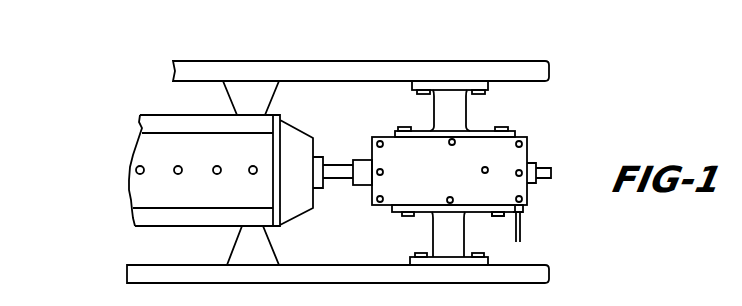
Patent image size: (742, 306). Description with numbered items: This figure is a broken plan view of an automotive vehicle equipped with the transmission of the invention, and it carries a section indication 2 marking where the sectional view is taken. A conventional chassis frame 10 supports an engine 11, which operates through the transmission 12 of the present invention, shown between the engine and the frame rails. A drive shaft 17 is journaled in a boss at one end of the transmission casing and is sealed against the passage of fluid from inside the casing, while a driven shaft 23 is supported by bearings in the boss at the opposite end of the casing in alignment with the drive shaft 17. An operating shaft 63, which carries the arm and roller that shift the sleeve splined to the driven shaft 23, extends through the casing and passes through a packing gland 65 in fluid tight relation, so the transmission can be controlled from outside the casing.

The chassis frame 10 is at (533, 66).
The engine 11 is at (136, 222).
The transmission 12 is at (531, 152).
The drive shaft 17 is at (357, 172).
The driven shaft 23 is at (549, 174).
The operating shaft 63 is at (521, 230).
The packing gland 65 is at (509, 216).
The section line of FIG. 2 is at (335, 172).